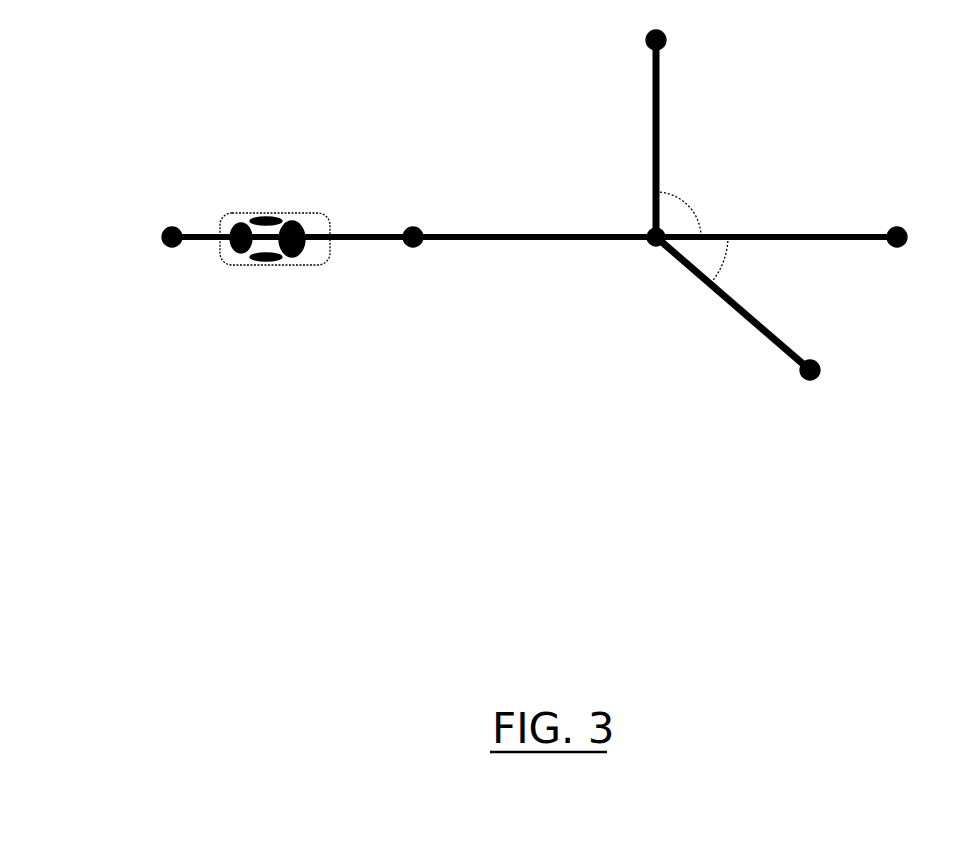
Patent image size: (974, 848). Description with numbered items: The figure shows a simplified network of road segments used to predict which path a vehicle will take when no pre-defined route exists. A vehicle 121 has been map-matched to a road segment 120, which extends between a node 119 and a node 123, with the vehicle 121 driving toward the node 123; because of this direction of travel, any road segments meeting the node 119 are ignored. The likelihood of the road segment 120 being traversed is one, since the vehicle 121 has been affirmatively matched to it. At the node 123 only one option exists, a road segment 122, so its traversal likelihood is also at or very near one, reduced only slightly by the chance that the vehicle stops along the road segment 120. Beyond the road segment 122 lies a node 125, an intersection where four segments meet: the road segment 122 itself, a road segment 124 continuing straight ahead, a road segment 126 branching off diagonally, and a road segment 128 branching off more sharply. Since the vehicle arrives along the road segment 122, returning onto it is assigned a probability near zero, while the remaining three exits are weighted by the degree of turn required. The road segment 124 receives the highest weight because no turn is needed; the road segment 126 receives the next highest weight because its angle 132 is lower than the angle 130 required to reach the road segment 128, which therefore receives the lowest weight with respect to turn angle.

The node 119 is at (122, 256).
The road segment 120 is at (255, 211).
The vehicle 121 is at (258, 214).
The road segment 122 is at (655, 211).
The node 123 is at (365, 271).
The road segment 124 is at (871, 218).
The node 125 is at (607, 270).
The road segment 126 is at (844, 337).
The road segment 128 is at (711, 73).
The angle 130 is at (731, 198).
The angle 132 is at (778, 264).